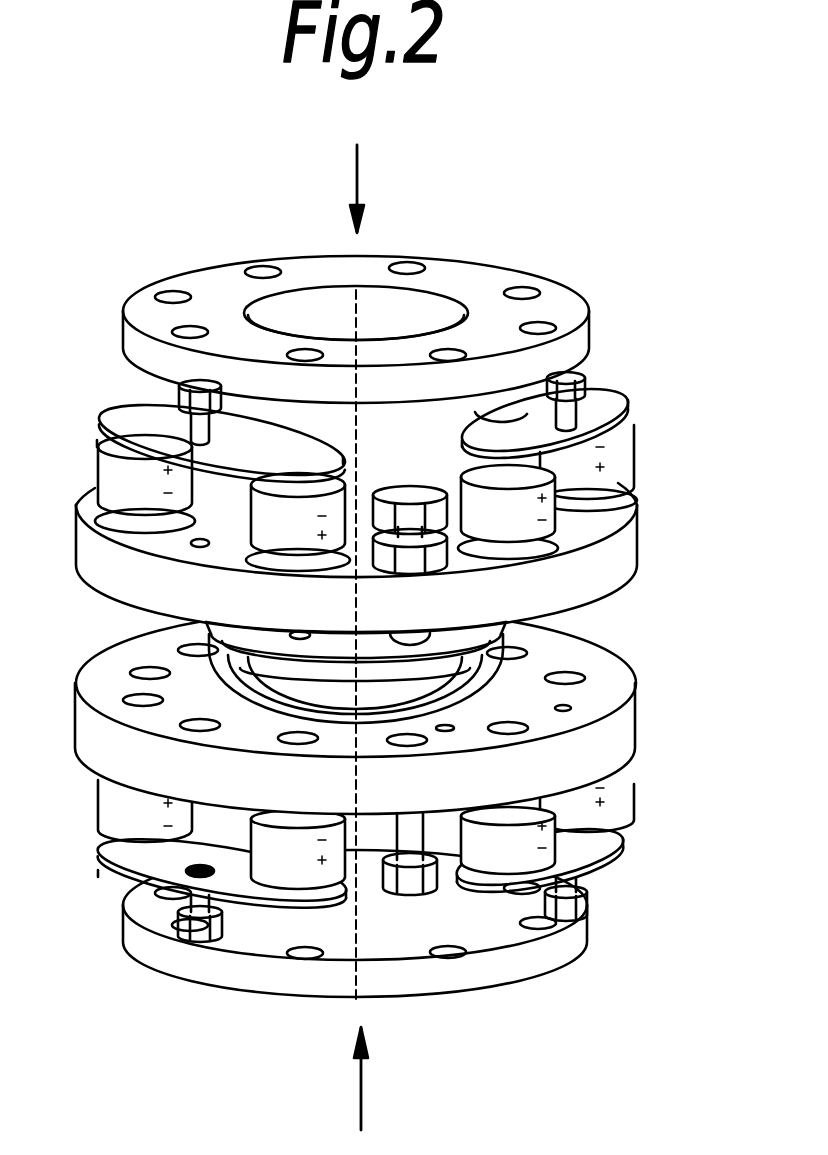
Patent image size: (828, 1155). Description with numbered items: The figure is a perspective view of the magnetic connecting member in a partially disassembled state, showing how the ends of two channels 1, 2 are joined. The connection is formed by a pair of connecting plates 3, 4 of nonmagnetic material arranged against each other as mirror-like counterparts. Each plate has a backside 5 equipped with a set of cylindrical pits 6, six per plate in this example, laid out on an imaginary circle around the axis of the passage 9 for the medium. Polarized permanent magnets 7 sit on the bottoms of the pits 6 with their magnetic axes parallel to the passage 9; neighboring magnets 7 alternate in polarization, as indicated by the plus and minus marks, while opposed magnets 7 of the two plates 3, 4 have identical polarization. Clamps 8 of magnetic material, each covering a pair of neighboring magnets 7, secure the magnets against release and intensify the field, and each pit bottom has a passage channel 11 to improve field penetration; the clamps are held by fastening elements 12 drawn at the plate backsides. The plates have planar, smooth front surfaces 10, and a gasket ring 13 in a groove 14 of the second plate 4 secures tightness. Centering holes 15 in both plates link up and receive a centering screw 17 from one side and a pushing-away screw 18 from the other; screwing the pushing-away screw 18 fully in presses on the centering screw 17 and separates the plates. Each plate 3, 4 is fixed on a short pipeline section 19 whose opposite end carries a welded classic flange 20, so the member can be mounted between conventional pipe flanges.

The channel 1 is at (364, 172).
The channel 2 is at (368, 1090).
The connecting plate 3 is at (623, 547).
The connecting plate 4 is at (628, 735).
The backside 5 is at (108, 498).
The pit 6 is at (523, 548).
The magnet 7 is at (110, 463).
The clamp 8 is at (600, 405).
The passage 9 is at (420, 318).
The front surface 10 is at (610, 690).
The passage channel 11 is at (566, 672).
The right fastening bolt 12 is at (570, 410).
The gasket ring 13 is at (218, 652).
The groove 14 is at (233, 620).
The centering hole 15 is at (427, 733).
The centering screw 17 is at (410, 497).
The pushing-away screw 18 is at (403, 837).
The pipeline section 19 is at (277, 413).
The flange 20 is at (495, 280).